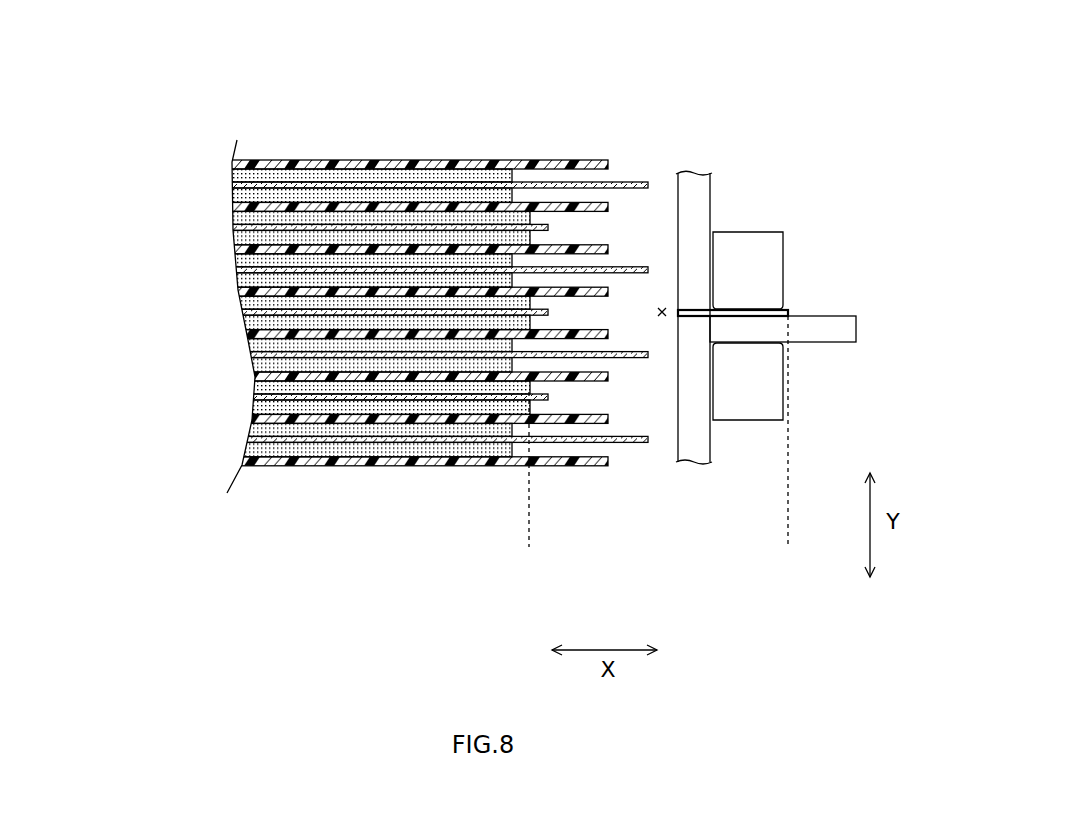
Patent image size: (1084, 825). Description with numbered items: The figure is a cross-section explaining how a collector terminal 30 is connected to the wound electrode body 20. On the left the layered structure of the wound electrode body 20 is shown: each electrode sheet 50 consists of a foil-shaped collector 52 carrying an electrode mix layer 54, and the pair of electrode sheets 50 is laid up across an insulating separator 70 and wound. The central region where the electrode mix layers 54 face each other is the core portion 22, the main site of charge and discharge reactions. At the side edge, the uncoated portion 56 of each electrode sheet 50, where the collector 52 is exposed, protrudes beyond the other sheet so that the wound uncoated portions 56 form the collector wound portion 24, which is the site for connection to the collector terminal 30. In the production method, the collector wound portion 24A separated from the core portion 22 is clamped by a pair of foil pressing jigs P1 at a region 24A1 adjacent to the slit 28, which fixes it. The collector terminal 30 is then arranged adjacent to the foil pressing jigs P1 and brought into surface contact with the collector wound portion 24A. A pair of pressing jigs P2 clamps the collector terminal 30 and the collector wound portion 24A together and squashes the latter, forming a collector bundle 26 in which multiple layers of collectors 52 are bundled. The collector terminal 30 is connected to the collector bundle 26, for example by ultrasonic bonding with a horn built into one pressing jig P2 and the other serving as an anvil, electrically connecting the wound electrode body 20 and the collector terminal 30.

The wound electrode body 20 is at (547, 88).
The core portion 22 is at (240, 555).
The collector wound portion 24 is at (529, 546).
The collector wound portion separated from the core portion 24A is at (757, 309).
The collector bundle 26 is at (700, 359).
The region adjacent to the slit 24A1 is at (695, 318).
The slit 28 is at (668, 306).
The collector terminal 30 is at (828, 342).
The electrode sheet 50 is at (138, 135).
The collector 52 is at (230, 184).
The electrode mix layer 54 is at (230, 172).
The uncoated portion 56 is at (633, 182).
The separator 70 is at (280, 160).
The foil pressing jig P1 is at (700, 172).
The pressing jig P2 is at (768, 232).